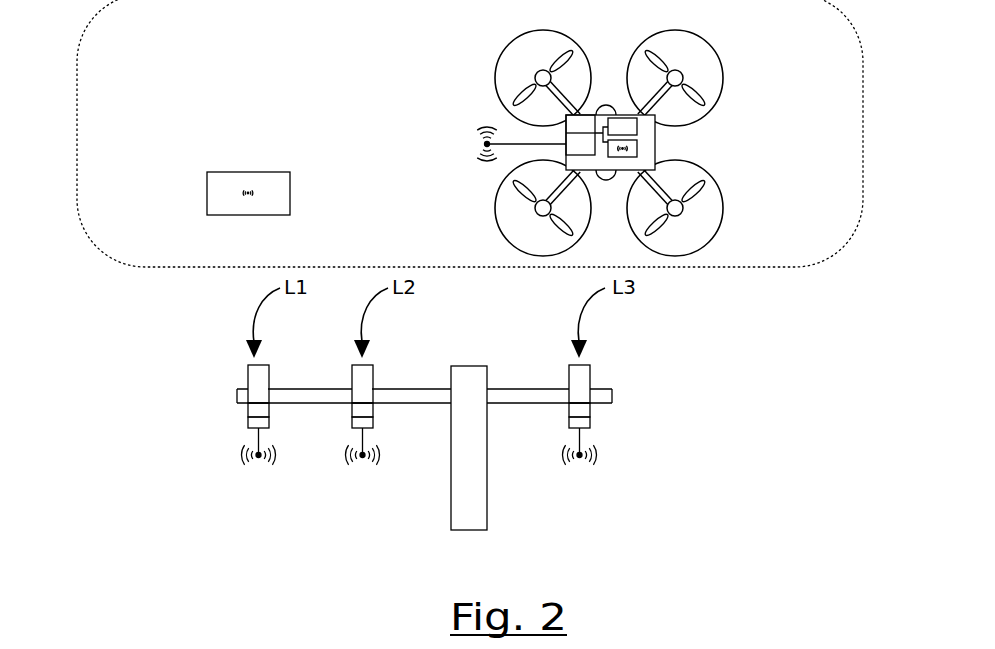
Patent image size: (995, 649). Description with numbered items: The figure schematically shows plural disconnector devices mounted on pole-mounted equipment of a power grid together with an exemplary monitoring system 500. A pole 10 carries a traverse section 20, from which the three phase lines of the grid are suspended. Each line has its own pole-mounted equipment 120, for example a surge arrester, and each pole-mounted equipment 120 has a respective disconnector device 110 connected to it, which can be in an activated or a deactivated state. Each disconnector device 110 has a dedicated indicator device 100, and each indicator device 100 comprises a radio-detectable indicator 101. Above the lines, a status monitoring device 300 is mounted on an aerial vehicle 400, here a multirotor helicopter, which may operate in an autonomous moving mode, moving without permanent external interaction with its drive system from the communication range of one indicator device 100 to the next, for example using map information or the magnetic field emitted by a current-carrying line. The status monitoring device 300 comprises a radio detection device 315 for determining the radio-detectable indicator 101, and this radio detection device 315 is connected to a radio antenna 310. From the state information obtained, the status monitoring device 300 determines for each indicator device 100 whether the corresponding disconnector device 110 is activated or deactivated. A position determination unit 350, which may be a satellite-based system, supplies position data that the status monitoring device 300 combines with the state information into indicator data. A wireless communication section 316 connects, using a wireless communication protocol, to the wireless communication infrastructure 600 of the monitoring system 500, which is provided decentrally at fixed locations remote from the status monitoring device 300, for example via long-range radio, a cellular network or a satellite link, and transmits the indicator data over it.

The pole 10 is at (480, 510).
The traverse section 20 is at (412, 390).
The indicator device 100 is at (419, 430).
The radio-detectable indicator 101 is at (250, 422).
The disconnector device 110 is at (650, 432).
The pole-mounted equipment 120 is at (658, 368).
The status monitoring device 300 is at (660, 139).
The radio antenna 310 is at (477, 128).
The radio detection device 315 is at (594, 116).
The wireless communication section 316 is at (617, 157).
The position determination unit 350 is at (637, 127).
The aerial vehicle 400 is at (650, 129).
The monitoring system 500 is at (112, 250).
The wireless communication infrastructure 600 is at (207, 197).